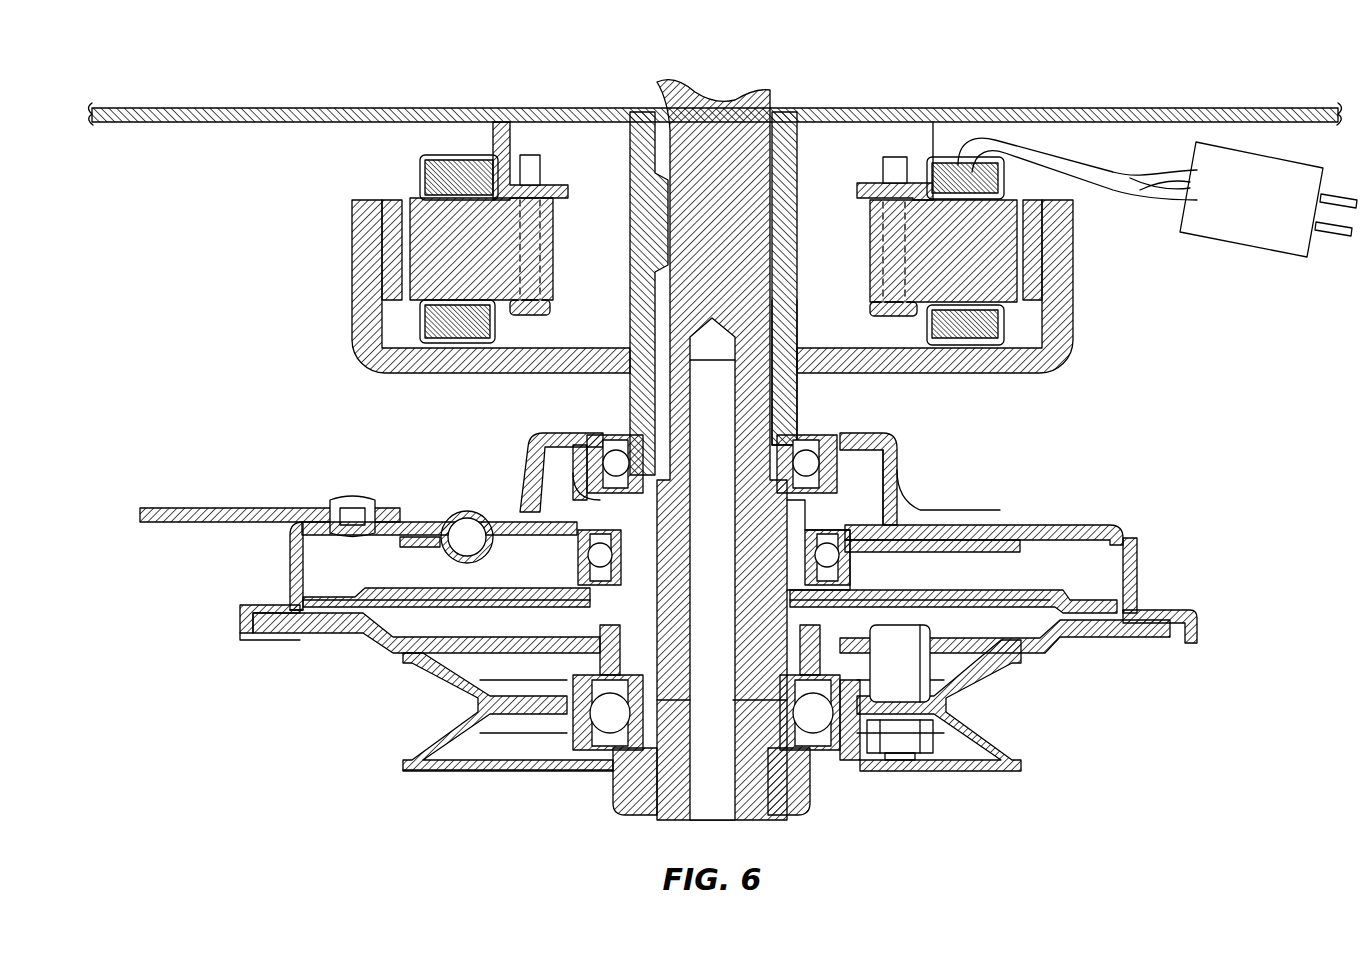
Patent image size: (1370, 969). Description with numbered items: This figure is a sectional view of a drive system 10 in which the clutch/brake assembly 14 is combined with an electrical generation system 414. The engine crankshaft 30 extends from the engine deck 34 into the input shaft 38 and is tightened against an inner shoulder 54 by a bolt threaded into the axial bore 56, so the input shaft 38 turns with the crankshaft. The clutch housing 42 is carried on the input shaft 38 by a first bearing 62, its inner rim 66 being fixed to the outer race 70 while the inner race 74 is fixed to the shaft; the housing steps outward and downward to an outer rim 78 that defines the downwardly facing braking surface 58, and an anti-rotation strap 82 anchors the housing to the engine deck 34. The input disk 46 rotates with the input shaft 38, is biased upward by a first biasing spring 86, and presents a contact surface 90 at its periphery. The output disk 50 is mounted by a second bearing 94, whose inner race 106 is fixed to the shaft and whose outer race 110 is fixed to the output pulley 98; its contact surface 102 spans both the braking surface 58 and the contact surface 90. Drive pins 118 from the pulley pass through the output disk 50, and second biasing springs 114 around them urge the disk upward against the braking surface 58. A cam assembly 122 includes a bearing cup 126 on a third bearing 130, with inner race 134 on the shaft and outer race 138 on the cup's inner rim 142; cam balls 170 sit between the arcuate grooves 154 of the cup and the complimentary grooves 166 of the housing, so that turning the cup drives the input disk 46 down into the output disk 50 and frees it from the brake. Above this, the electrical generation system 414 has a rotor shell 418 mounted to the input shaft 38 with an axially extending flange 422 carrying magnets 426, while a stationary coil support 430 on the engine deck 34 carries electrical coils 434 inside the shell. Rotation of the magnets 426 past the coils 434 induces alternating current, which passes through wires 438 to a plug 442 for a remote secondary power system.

The drive system 10 is at (1218, 398).
The clutch/brake assembly 14 is at (318, 740).
The engine crankshaft 30 is at (738, 100).
The engine deck 34 is at (233, 123).
The input shaft 38 is at (797, 125).
The clutch housing 42 is at (290, 578).
The input disk 46 is at (400, 640).
The output disk 50 is at (378, 607).
The inner shoulder 54 is at (790, 370).
The axial bore 56 is at (718, 800).
The braking surface 58 is at (255, 605).
The first bearing 62 is at (818, 445).
The inner rim 66 is at (870, 450).
The outer race 70 is at (900, 470).
The inner race 74 is at (800, 440).
The outer rim 78 is at (1140, 575).
The anti-rotation strap 82 is at (240, 508).
The first biasing spring 86 is at (590, 700).
The contact surface 90 is at (302, 560).
The second bearing 94 is at (820, 755).
The output pulley 98 is at (425, 705).
The contact surface 102 is at (297, 615).
The inner race 106 is at (760, 700).
The outer race 110 is at (855, 752).
The second biasing springs 114 is at (935, 690).
The drive pins 118 is at (930, 670).
The cam assembly 122 is at (437, 502).
The bearing cup 126 is at (420, 585).
The third bearing 130 is at (960, 542).
The inner race 134 is at (800, 548).
The outer race 138 is at (875, 525).
The inner rim 142 is at (905, 475).
The arcuate grooves 154 is at (480, 562).
The complimentary grooves 166 is at (463, 517).
The cam balls 170 is at (455, 545).
The electrical generation system 414 is at (245, 222).
The rotor shell 418 is at (460, 375).
The axially extending flange 422 is at (352, 272).
The magnets 426 is at (1060, 252).
The coil support 430 is at (713, 257).
The electrical coils 434 is at (945, 172).
The wires 438 is at (1048, 156).
The plug 442 is at (1268, 199).